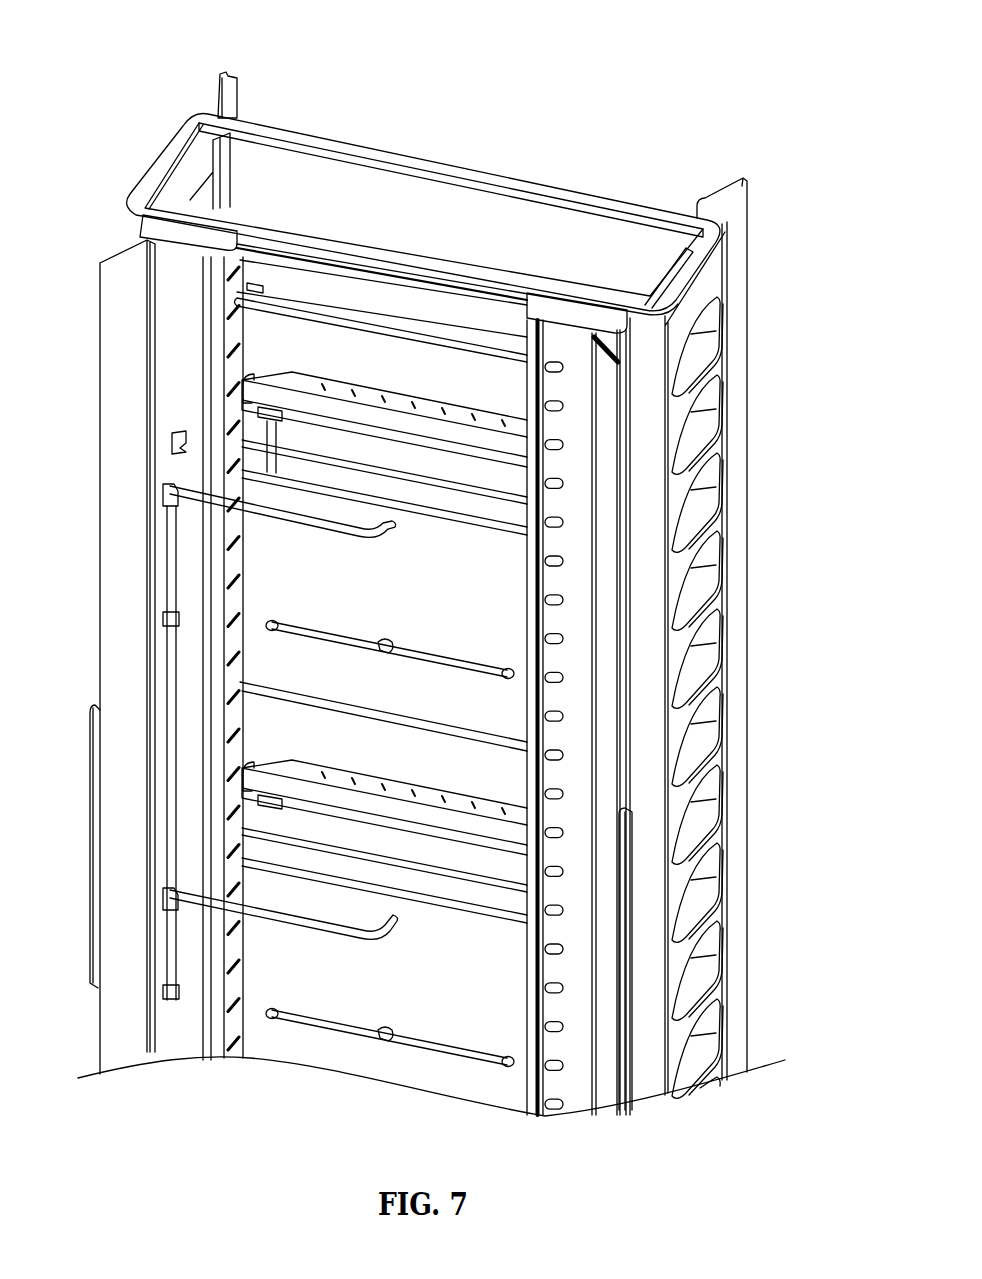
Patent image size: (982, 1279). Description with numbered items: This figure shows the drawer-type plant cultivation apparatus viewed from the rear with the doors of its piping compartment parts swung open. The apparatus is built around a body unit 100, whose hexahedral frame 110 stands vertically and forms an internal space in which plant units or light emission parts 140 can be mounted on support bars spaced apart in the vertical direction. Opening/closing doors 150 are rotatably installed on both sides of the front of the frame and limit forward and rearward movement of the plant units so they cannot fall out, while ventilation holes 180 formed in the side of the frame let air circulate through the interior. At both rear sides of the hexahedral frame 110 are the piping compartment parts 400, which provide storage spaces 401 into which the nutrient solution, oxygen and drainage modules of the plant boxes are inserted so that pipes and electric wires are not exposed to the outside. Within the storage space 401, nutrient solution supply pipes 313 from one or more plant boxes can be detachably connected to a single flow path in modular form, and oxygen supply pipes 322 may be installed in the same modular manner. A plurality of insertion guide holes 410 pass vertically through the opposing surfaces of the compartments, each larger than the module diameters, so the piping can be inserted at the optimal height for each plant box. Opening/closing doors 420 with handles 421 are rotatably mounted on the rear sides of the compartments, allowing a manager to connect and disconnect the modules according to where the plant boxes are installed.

The body unit 100 is at (250, 129).
The hexahedral frame 110 is at (194, 112).
The light emission parts 140 is at (373, 316).
The opening/closing doors 150 is at (222, 72).
The ventilation holes 180 is at (705, 320).
The nutrient solution supply pipes 313 is at (366, 530).
The oxygen supply pipes 322 is at (318, 642).
The piping compartment parts 400 is at (200, 233).
The storage spaces 401 is at (170, 310).
The insertion guide holes 410 is at (545, 405).
The opening/closing doors 420 is at (108, 592).
The handles 421 is at (94, 760).